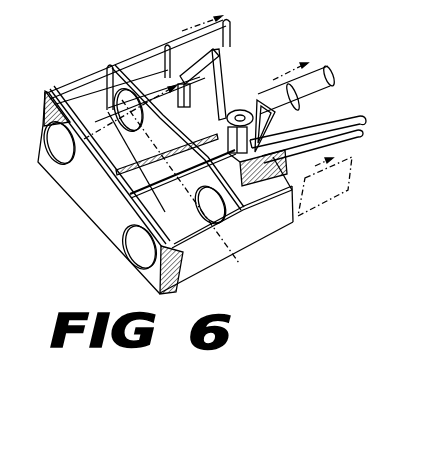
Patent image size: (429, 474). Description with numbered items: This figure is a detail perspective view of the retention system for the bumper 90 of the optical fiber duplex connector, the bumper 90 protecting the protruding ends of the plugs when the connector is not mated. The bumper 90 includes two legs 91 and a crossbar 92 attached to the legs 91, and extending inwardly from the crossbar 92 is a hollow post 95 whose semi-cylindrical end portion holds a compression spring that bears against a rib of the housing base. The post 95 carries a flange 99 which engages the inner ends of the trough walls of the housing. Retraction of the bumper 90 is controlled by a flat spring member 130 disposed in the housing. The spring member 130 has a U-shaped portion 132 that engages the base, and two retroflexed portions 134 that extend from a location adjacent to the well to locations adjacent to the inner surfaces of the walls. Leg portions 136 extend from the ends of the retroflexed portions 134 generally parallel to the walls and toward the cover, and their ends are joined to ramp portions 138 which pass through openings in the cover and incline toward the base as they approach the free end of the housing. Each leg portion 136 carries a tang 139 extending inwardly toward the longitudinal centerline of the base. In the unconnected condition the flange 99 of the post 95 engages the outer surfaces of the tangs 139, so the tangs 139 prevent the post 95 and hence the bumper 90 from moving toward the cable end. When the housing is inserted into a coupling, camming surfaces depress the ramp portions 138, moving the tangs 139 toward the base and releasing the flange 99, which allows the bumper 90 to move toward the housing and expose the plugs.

The bumper 90 is at (100, 226).
The legs 91 is at (254, 233).
The crossbar 92 is at (101, 225).
The hollow post 95 is at (137, 188).
The flange 99 is at (206, 117).
The flat spring member 130 is at (337, 68).
The U-shaped portion 132 is at (340, 136).
The retroflexed portions 134 is at (333, 117).
The leg portions 136 is at (253, 158).
The ramp portions 138 is at (224, 47).
The tang 139 is at (232, 93).